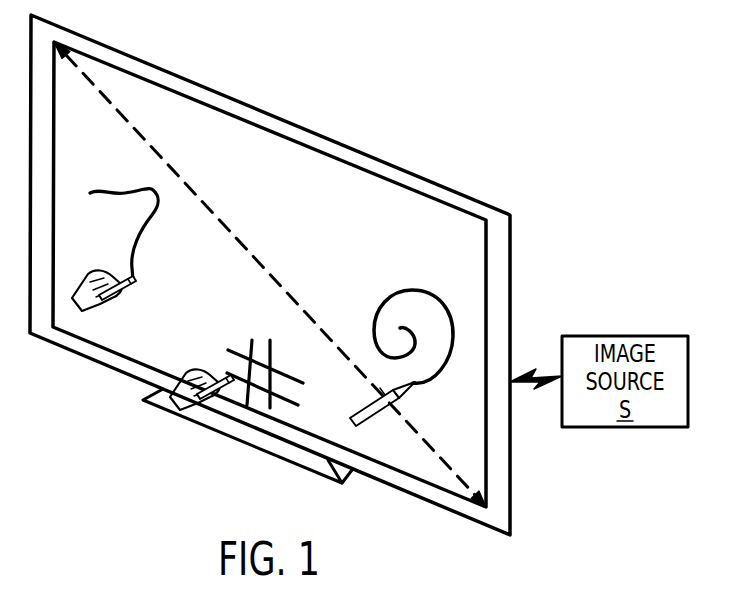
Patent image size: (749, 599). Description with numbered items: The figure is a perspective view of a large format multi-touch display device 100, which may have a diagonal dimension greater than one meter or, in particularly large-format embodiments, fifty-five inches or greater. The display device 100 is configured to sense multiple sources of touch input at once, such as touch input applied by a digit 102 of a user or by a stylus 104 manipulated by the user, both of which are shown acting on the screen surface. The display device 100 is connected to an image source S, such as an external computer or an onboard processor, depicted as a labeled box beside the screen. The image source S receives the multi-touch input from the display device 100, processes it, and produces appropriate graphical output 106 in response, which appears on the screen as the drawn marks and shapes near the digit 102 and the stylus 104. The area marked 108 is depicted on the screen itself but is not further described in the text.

The large format multi-touch display device 100 is at (332, 78).
The digit 102 is at (227, 380).
The stylus 104 is at (357, 425).
The graphical output 106 is at (130, 190).
The large-format display 108 is at (475, 250).